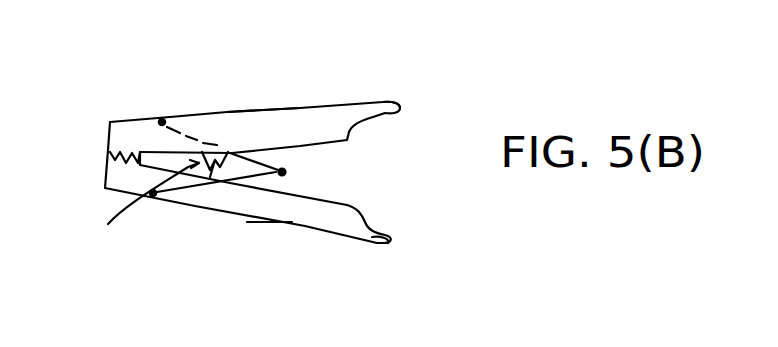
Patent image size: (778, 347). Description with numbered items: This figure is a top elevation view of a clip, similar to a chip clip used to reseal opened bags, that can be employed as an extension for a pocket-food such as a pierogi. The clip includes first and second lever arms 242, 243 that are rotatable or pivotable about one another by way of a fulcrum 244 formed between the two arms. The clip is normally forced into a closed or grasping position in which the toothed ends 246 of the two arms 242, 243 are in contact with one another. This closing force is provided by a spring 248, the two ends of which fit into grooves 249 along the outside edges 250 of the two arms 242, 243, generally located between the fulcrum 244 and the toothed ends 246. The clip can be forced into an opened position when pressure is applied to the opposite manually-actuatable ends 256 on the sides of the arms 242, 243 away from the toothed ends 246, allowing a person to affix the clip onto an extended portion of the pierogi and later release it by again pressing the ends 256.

The first lever arm 242 is at (292, 222).
The second lever arm 243 is at (278, 118).
The fulcrum 244 is at (136, 209).
The toothed ends 246 is at (122, 119).
The spring 248 is at (280, 175).
The grooves 249 is at (163, 121).
The outside edges 250 is at (227, 112).
The manually-actuatable ends 256 is at (388, 106).